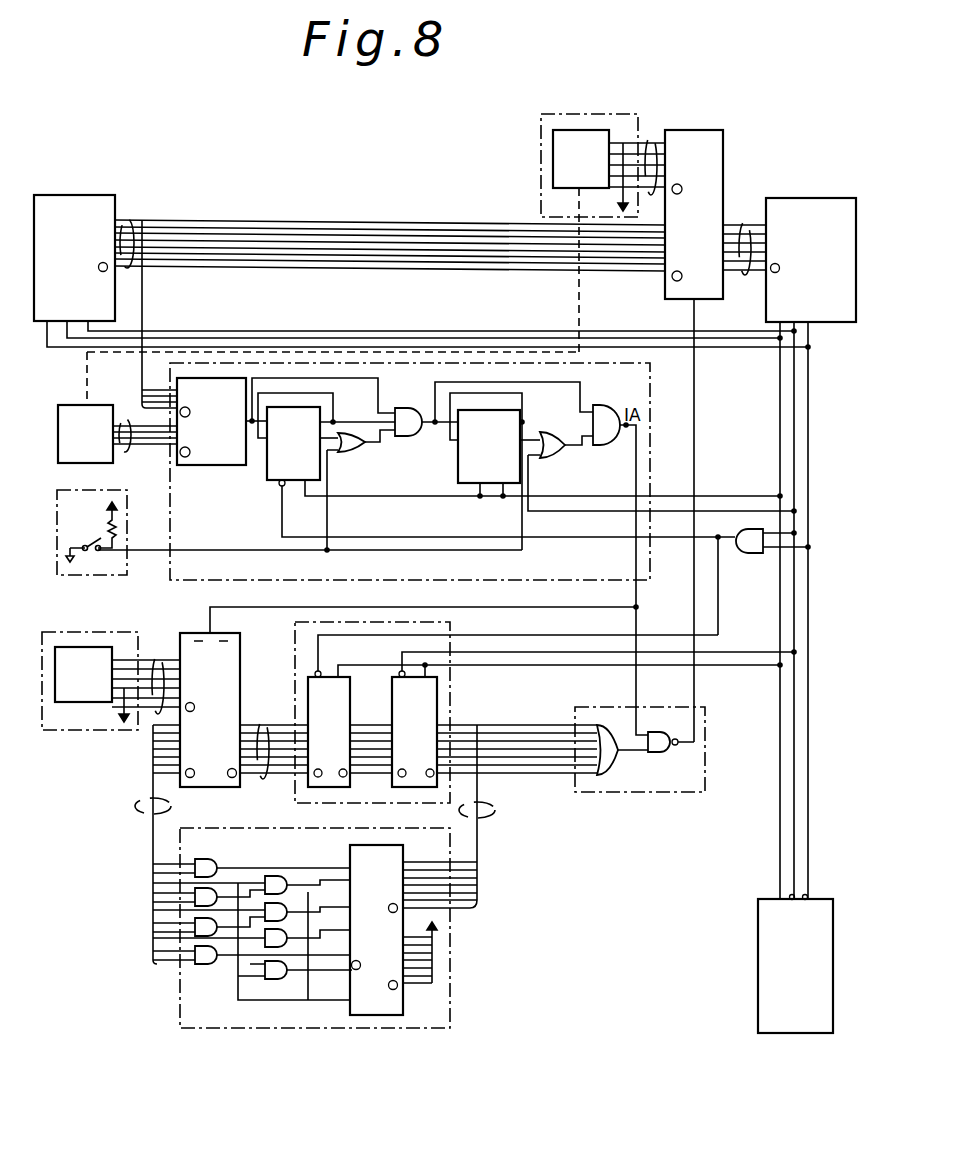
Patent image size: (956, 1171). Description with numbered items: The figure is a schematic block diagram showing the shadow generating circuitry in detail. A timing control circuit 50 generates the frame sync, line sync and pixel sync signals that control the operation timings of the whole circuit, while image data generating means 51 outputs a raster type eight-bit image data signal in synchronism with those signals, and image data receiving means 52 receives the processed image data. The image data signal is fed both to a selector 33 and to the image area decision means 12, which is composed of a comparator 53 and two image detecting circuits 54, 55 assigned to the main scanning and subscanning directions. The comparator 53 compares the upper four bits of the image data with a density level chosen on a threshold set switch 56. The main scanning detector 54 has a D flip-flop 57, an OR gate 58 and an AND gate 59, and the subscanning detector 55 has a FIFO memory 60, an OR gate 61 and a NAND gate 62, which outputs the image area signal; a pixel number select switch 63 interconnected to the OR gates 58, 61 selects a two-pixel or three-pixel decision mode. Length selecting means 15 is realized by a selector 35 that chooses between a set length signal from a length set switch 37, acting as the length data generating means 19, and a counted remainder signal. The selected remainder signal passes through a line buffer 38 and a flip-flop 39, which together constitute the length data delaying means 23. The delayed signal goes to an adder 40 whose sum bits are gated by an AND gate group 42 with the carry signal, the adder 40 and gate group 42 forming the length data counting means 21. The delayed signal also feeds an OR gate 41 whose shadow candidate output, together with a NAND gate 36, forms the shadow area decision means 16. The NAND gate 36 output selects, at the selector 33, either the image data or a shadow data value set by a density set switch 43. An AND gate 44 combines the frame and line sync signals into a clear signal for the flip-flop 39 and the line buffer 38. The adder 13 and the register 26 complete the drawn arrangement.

The image area decision means 12 is at (650, 400).
The adder 13 is at (723, 172).
The length selecting means 15 is at (200, 633).
The shadow area decision means 16 is at (700, 792).
The length data generating means 19 is at (120, 632).
The length data counting means 21 is at (450, 975).
The length data delaying means 23 is at (450, 628).
The offset register 26 is at (541, 165).
The selector 33 is at (706, 130).
The selector 35 is at (240, 640).
The NAND gate 36 is at (660, 752).
The length set switch 37 is at (85, 647).
The line buffer 38 is at (437, 690).
The flip-flop 39 is at (308, 690).
The adder 40 is at (403, 1015).
The OR gate 41 is at (612, 775).
The AND gate group 42 is at (252, 1028).
The density set switch 43 is at (553, 150).
The AND gate 44 is at (748, 553).
The timing control circuit 50 is at (758, 955).
The image data generating means 51 is at (72, 195).
The image data receiving means 52 is at (820, 198).
The comparator 53 is at (208, 465).
The image detecting circuit 54 is at (353, 407).
The image detecting circuit 55 is at (550, 404).
The threshold set switch 56 is at (70, 405).
The D flip-flop 57 is at (267, 470).
The OR gate 58 is at (352, 452).
The AND gate 59 is at (413, 404).
The FIFO memory 60 is at (458, 468).
The OR gate 61 is at (558, 458).
The NAND gate 62 is at (622, 430).
The pixel number select switch 63 is at (112, 492).